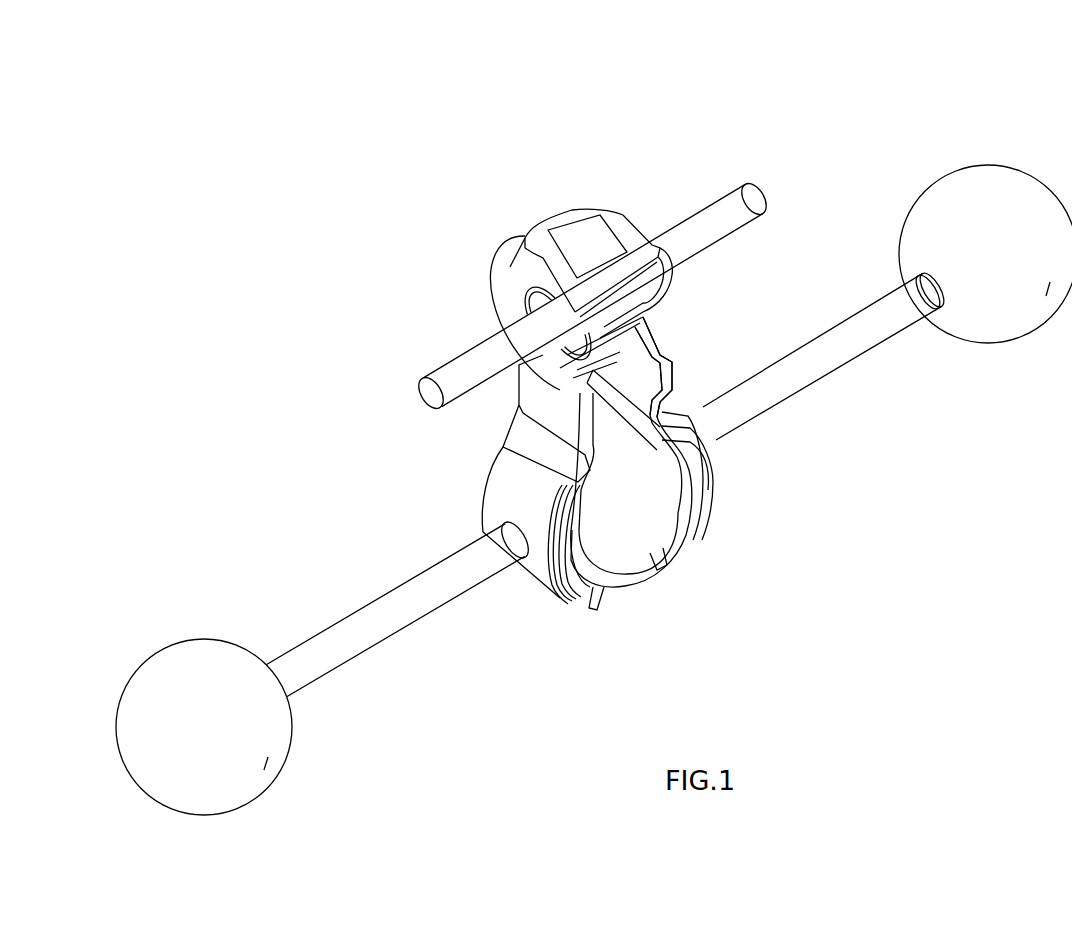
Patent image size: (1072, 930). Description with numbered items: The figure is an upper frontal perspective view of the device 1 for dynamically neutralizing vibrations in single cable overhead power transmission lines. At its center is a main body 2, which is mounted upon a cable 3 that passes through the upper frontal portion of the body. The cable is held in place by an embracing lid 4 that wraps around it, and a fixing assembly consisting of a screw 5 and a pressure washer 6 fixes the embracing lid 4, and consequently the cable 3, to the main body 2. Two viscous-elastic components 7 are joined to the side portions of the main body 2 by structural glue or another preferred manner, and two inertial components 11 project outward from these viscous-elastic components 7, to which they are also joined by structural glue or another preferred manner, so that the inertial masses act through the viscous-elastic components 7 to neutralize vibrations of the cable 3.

The device for dynamically neutralizing vibrations 1 is at (430, 127).
The main body 2 is at (493, 284).
The cable 3 is at (690, 210).
The embracing lid 4 is at (673, 282).
The screw 5 is at (600, 352).
The pressure washer 6 is at (623, 347).
The viscous-elastic components 7 is at (587, 577).
The inertial components 11 is at (553, 603).